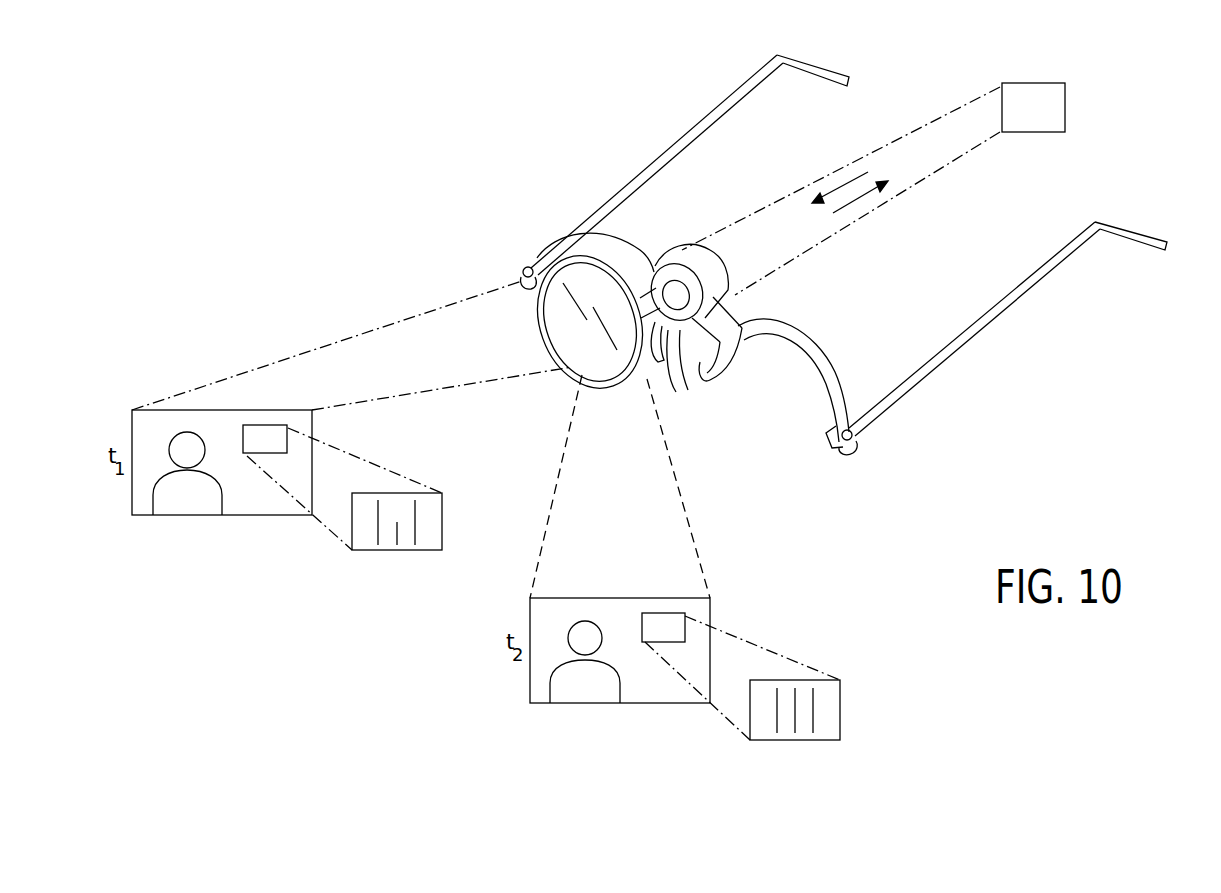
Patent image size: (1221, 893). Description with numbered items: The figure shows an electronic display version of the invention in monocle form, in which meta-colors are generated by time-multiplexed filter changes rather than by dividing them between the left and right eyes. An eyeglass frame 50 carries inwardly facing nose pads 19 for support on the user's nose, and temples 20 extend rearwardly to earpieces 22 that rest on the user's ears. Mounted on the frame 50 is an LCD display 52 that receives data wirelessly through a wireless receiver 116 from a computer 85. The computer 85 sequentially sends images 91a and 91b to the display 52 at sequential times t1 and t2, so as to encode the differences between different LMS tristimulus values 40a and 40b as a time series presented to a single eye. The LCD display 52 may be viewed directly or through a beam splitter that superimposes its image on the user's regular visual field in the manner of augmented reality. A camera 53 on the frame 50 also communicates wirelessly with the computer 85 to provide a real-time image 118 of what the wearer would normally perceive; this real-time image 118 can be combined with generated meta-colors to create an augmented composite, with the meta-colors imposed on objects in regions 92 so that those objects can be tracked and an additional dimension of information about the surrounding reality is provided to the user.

The nose pads 19 is at (676, 393).
The temples 20 is at (730, 97).
The earpieces 22 is at (830, 62).
The LMS tristimulus values 40a is at (798, 749).
The LMS tristimulus values 40b is at (400, 559).
The frame 50 is at (593, 182).
The LCD display 52 is at (578, 338).
The camera 53 is at (714, 288).
The computer 85 is at (1048, 118).
The image 91a is at (183, 374).
The image 91b is at (576, 578).
The regions 92 is at (261, 425).
The wireless receiver 116 is at (668, 262).
The real-time image 118 is at (165, 502).